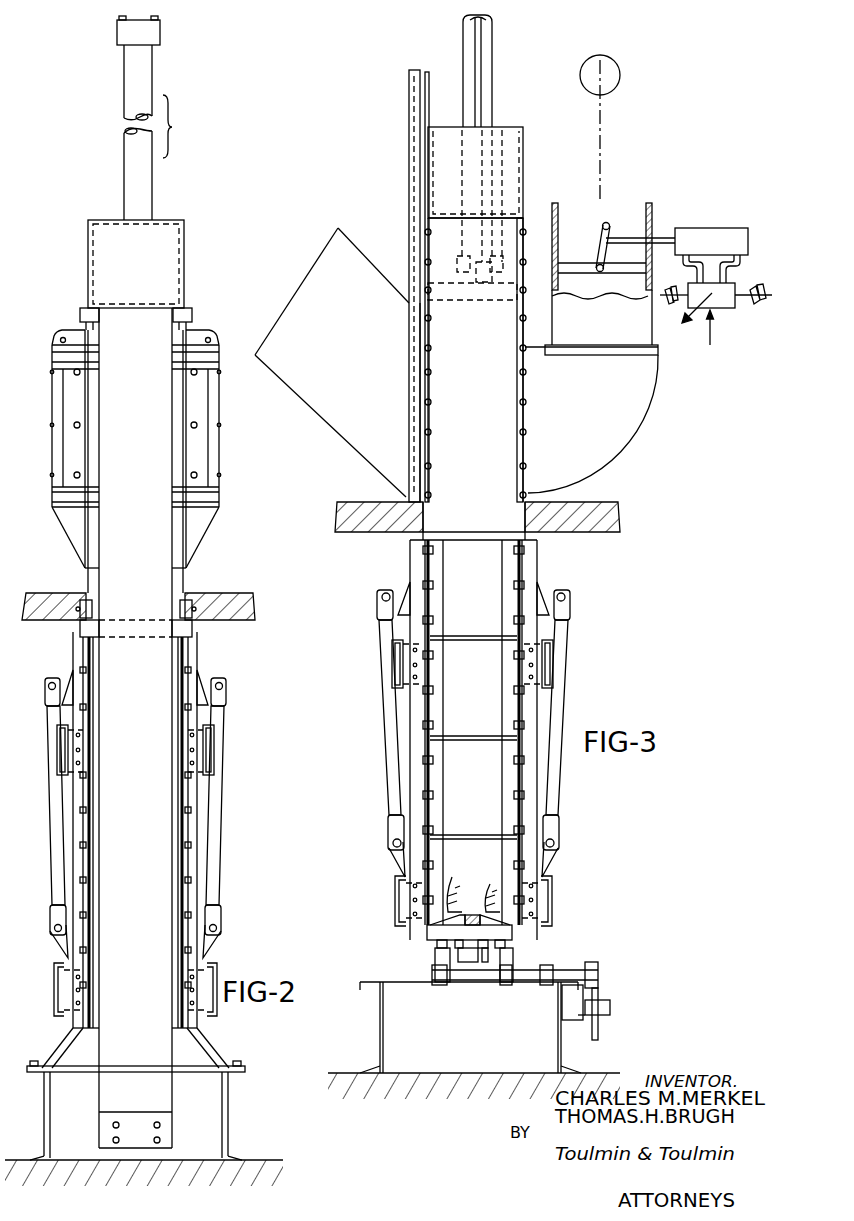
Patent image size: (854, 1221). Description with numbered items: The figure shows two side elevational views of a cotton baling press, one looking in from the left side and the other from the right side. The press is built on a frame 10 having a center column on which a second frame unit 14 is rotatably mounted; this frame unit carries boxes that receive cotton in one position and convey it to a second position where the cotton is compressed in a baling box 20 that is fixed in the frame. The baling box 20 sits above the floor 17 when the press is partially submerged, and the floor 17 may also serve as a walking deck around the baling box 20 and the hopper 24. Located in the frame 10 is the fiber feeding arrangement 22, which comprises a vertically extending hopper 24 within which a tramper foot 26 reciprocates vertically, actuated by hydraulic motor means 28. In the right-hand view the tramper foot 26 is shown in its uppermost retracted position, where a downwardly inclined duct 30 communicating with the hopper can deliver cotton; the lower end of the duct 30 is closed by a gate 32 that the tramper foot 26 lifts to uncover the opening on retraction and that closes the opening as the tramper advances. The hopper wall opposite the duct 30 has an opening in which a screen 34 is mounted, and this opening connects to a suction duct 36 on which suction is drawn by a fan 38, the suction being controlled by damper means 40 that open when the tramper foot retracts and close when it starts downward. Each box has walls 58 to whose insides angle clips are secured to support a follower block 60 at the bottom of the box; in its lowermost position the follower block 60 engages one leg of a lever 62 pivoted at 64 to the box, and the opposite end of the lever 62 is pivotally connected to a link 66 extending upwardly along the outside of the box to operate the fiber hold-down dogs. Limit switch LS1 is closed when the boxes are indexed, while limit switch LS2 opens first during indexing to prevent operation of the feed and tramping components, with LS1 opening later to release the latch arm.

In FIG. 2, the frame 10 is at (216, 1124).
In FIG. 3, the frame 10 is at (478, 1066).
In FIG. 2, the second frame unit 14 is at (203, 766).
In FIG. 3, the second frame unit 14 is at (545, 668).
In FIG. 2, the floor 17 is at (241, 600).
In FIG. 3, the floor 17 is at (613, 502).
In FIG. 2, the baling box 20 is at (219, 468).
In FIG. 3, the fiber feeding arrangement 22 is at (500, 445).
In FIG. 3, the hopper 24 is at (482, 406).
In FIG. 3, the tramper foot 26 is at (458, 295).
In FIG. 2, the hydraulic motor means 28 is at (153, 68).
In FIG. 3, the hydraulic motor means 28 is at (494, 63).
In FIG. 3, the downwardly inclined duct 30 is at (355, 273).
In FIG. 3, the gate 32 is at (407, 121).
In FIG. 3, the screen 34 is at (413, 391).
In FIG. 3, the suction duct 36 is at (645, 402).
In FIG. 3, the fan 38 is at (620, 78).
In FIG. 3, the damper means 40 is at (577, 274).
In FIG. 2, the walls of the boxes 58 is at (96, 793).
In FIG. 3, the walls of the boxes 58 is at (434, 692).
In FIG. 3, the follower block 60 is at (446, 930).
In FIG. 2, the lever 62 is at (60, 950).
In FIG. 3, the lever 62 is at (398, 850).
In FIG. 2, the pivot 64 is at (58, 964).
In FIG. 3, the pivot 64 is at (404, 880).
In FIG. 2, the link 66 is at (53, 832).
In FIG. 3, the link 66 is at (393, 780).
In FIG. 3, the limit switch LS1 is at (460, 884).
In FIG. 3, the limit switch LS2 is at (484, 893).